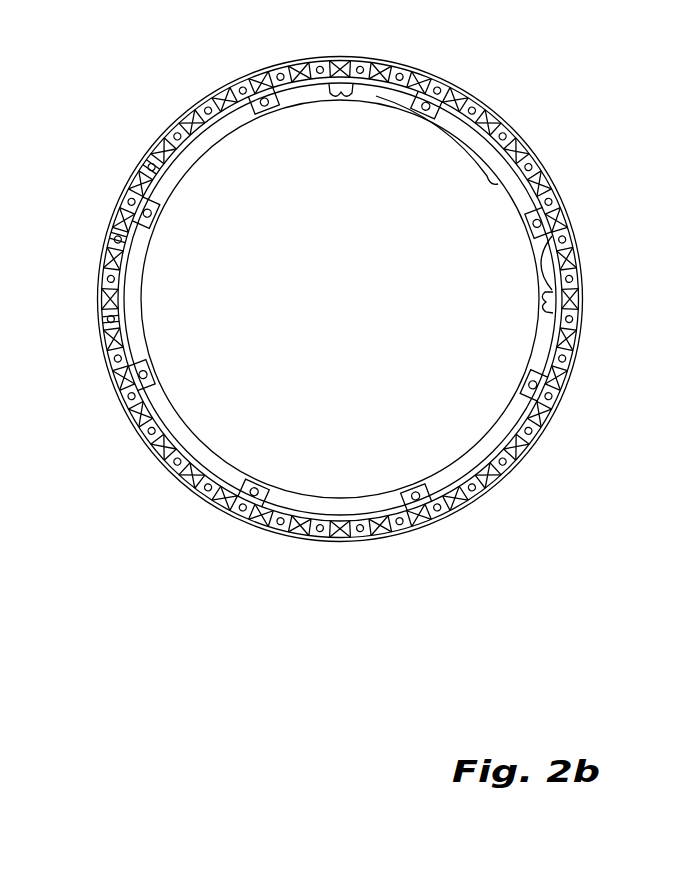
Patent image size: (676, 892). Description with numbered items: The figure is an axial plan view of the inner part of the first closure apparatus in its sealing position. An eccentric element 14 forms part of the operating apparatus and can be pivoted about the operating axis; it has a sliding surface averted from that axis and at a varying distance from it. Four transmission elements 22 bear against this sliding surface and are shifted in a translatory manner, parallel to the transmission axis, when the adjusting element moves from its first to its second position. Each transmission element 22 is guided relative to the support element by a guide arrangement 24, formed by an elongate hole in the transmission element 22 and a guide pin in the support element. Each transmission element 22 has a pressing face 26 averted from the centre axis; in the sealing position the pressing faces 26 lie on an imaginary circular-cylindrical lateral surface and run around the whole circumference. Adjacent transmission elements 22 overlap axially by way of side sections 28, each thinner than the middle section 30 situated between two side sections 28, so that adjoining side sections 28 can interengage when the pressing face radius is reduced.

The eccentric element 14 is at (548, 222).
The transmission element 22 is at (193, 105).
The guide arrangement 24 is at (134, 153).
The pressing face 26 is at (297, 541).
The side section 28 is at (340, 100).
The middle section 30 is at (494, 183).